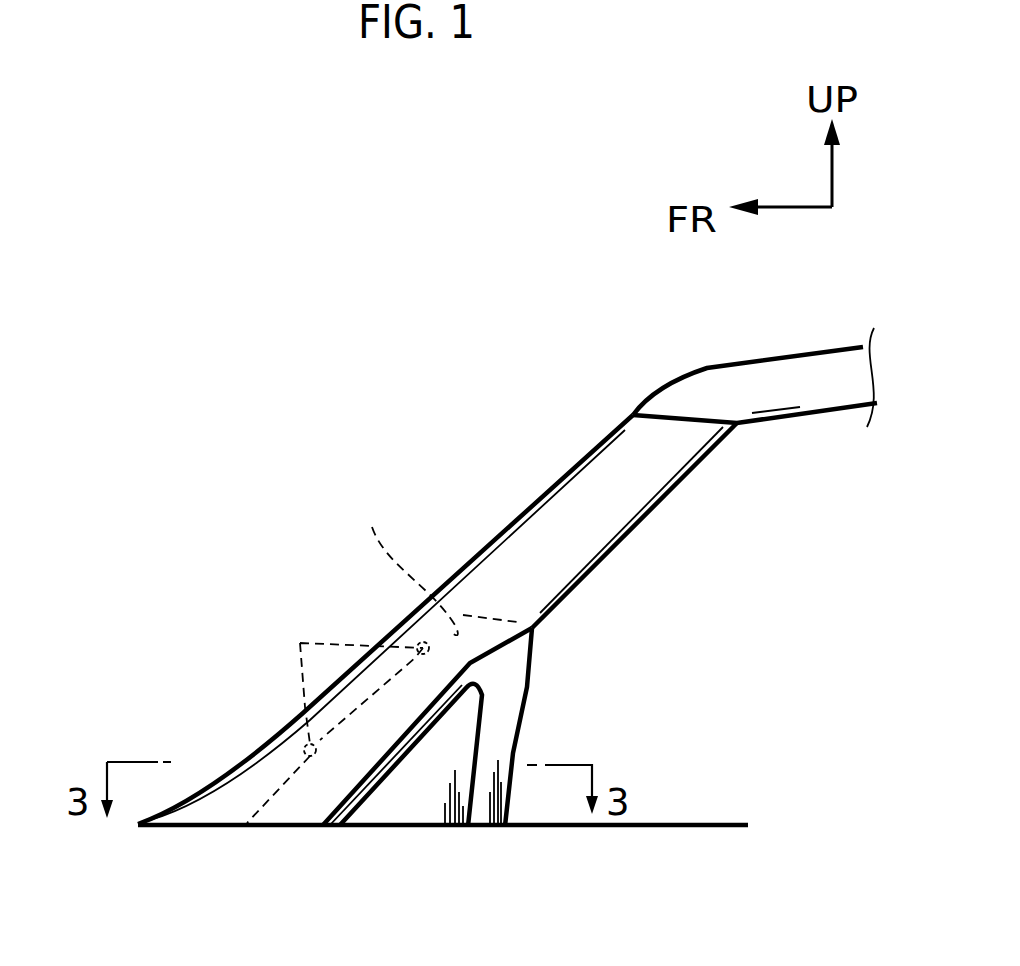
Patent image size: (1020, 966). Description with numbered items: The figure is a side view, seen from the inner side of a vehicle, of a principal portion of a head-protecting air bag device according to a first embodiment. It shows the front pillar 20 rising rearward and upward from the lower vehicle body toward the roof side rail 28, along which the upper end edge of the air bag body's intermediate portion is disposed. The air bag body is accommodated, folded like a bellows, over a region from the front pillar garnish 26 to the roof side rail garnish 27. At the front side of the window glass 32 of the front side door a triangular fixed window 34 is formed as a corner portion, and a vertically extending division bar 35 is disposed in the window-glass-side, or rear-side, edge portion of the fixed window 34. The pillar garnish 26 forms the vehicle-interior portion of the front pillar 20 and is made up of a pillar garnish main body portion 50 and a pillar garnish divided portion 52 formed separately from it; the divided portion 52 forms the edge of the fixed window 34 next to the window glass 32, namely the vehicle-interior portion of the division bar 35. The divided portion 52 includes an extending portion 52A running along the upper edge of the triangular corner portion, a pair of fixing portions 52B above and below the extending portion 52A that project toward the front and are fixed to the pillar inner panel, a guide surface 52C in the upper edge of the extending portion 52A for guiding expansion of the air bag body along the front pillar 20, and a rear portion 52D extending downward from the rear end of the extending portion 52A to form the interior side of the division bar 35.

The front pillar 20 is at (483, 531).
The front pillar garnish 26 is at (560, 624).
The roof side rail garnish 27 is at (822, 418).
The roof side rail 28 is at (787, 346).
The window glass 32 is at (690, 797).
The fixed window 34 is at (434, 793).
The division bar 35 is at (535, 681).
The pillar garnish main body portion 50 is at (576, 608).
The pillar garnish divided portion 52 is at (522, 748).
The extending portion 52A is at (395, 748).
The fixing portions 52B is at (323, 714).
The guide surface 52C is at (412, 563).
The rear portion 52D is at (490, 782).